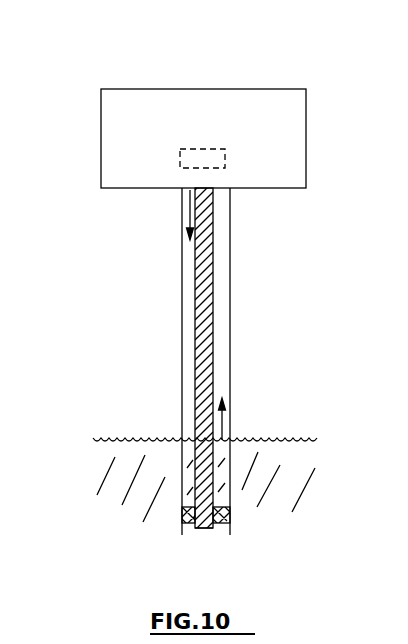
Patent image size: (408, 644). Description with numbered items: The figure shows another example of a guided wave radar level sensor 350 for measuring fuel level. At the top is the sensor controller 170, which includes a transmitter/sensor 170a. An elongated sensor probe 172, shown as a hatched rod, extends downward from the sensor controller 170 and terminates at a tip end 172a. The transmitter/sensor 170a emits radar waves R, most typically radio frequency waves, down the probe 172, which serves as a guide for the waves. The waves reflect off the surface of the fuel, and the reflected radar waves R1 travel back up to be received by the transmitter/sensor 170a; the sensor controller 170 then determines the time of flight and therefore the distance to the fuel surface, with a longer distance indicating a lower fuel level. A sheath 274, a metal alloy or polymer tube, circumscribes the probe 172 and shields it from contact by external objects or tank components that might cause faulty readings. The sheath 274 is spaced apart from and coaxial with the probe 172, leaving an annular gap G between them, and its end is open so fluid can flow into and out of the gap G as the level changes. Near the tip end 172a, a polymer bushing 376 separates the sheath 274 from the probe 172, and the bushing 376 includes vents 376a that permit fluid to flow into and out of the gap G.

The sensor controller 170 is at (277, 113).
The transmitter/sensor 170a is at (180, 161).
The guided wave radar level sensor 350 is at (148, 217).
The sensor probe 172 is at (212, 276).
The tip end 172a is at (206, 530).
The sheath 274 is at (230, 347).
The bushing 376 is at (182, 521).
The vents 376a is at (230, 521).
The gap G is at (223, 318).
The radar waves R is at (190, 207).
The reflected radar waves R1 is at (226, 422).